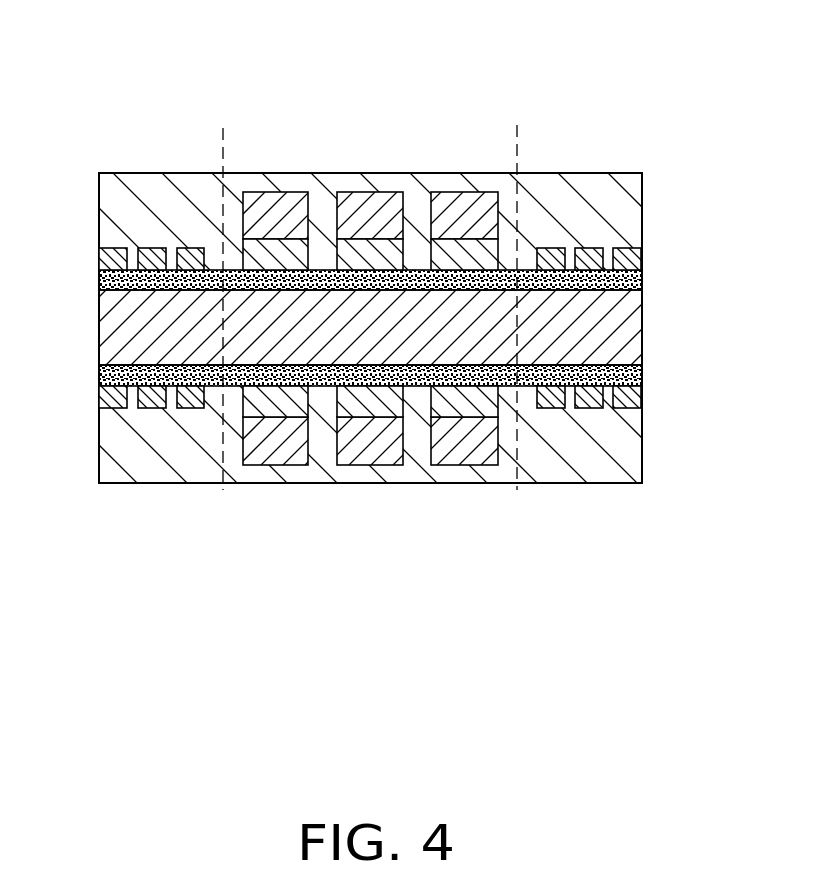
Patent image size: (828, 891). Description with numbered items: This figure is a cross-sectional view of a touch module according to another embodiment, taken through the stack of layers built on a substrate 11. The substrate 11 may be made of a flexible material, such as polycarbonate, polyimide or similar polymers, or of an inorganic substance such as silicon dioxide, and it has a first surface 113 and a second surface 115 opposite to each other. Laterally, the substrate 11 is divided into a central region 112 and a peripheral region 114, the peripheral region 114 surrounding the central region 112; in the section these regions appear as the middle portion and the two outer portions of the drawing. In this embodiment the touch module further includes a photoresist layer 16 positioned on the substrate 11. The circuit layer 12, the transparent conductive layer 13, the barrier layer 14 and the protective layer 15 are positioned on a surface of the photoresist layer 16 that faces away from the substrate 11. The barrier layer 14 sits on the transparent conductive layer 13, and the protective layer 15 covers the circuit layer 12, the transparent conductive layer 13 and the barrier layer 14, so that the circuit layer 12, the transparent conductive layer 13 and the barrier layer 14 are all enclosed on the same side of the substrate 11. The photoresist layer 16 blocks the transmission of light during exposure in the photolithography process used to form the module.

The substrate 11 is at (622, 308).
The circuit layer 12 is at (632, 257).
The transparent conductive layer 13 is at (480, 257).
The barrier layer 14 is at (465, 215).
The protective layer 15 is at (622, 208).
The photoresist layer 16 is at (632, 373).
The central region 112 is at (355, 102).
The first surface 113 is at (100, 282).
The peripheral region 114 is at (170, 118).
The second surface 115 is at (140, 366).